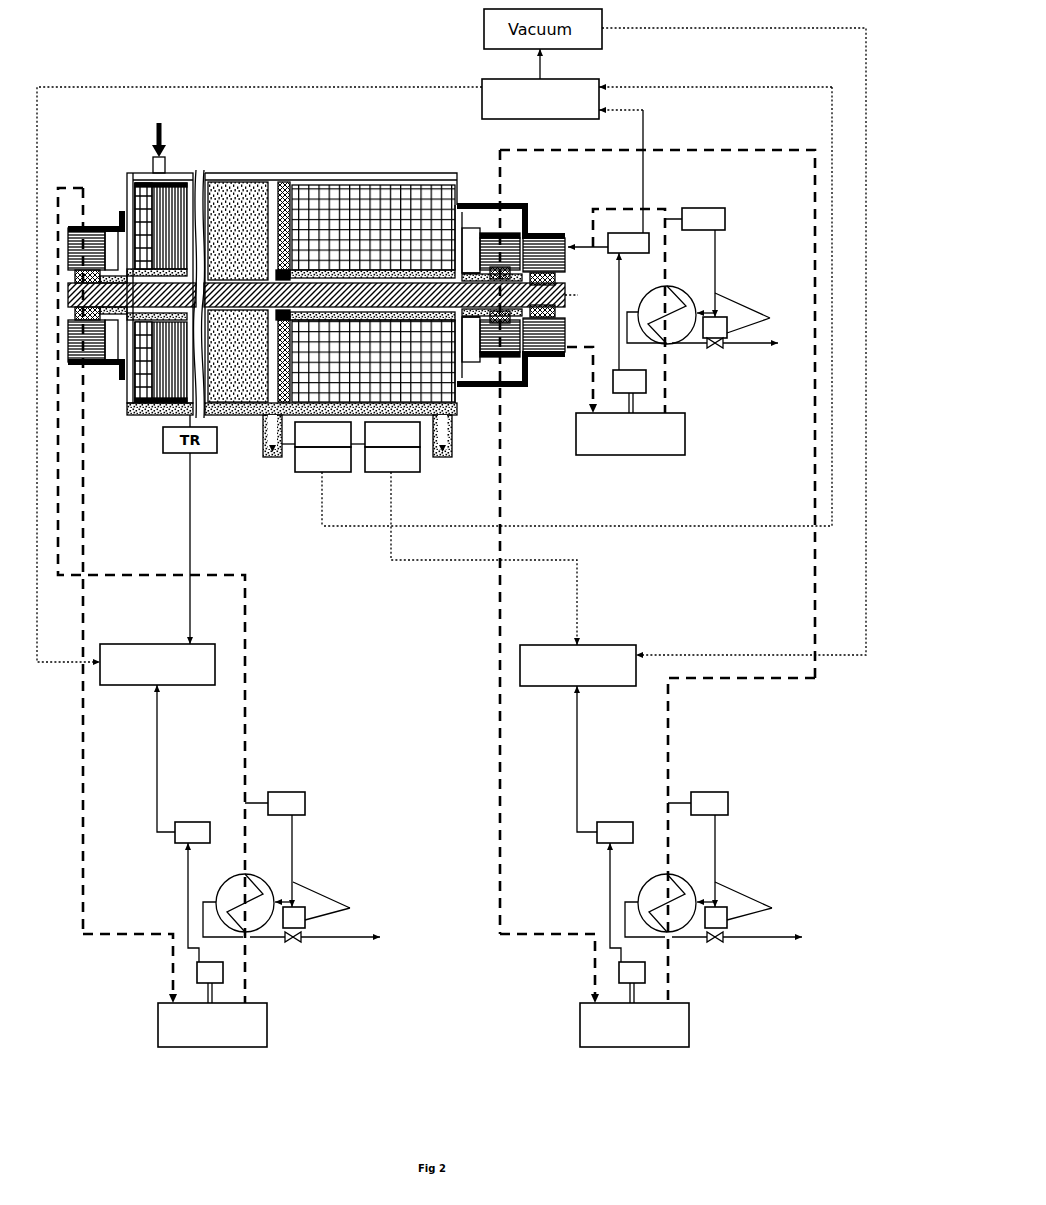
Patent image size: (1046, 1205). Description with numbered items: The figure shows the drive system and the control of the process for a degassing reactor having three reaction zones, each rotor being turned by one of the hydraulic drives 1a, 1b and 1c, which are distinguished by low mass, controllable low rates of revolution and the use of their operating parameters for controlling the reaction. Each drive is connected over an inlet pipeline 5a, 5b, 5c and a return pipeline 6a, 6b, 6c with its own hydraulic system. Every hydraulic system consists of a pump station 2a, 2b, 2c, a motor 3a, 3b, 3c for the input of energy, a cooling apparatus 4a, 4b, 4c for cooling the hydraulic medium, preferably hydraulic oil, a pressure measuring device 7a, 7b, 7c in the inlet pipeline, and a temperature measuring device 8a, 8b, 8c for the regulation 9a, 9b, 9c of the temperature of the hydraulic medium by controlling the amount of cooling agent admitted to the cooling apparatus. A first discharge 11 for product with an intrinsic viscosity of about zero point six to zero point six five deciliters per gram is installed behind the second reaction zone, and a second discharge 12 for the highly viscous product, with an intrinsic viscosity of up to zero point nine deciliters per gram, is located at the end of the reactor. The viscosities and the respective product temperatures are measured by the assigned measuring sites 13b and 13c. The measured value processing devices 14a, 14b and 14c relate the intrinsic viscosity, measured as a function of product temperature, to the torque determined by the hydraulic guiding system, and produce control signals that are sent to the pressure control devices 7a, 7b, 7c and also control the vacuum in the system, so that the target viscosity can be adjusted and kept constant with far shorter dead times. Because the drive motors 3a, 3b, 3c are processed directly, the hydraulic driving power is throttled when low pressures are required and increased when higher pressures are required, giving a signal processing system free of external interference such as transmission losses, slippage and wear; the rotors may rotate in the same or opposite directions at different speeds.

The hydraulic drive 1a is at (92, 367).
The hydraulic drive 1b is at (565, 272).
The hydraulic drive 1c is at (520, 336).
The pump station 2a is at (167, 1023).
The pump station 2b is at (587, 432).
The pump station 2c is at (589, 1023).
The motor 3a is at (211, 962).
The motor 3b is at (632, 370).
The motor 3c is at (633, 962).
The cooling apparatus 4a is at (237, 897).
The cooling apparatus 4b is at (655, 307).
The cooling apparatus 4c is at (659, 897).
The inlet pipeline 5a is at (247, 668).
The inlet pipeline 5b is at (628, 207).
The inlet pipeline 5c is at (722, 678).
The return pipeline 6a is at (172, 963).
The return pipeline 6b is at (593, 373).
The return pipeline 6c is at (594, 963).
The pressure measuring device 7a is at (193, 822).
The pressure measuring device 7b is at (613, 238).
The pressure measuring device 7c is at (615, 822).
The temperature measuring device 8a is at (287, 792).
The temperature measuring device 8b is at (715, 208).
The temperature measuring device 8c is at (712, 792).
The regulation 9a is at (327, 912).
The regulation 9b is at (747, 320).
The regulation 9c is at (749, 912).
The first discharge 11 is at (263, 457).
The second discharge 12 is at (448, 457).
The measuring site 13b is at (305, 470).
The measuring site 13c is at (408, 462).
The measured value processing device 14a is at (121, 650).
The measured value processing device 14b is at (482, 100).
The measured value processing device 14c is at (612, 650).